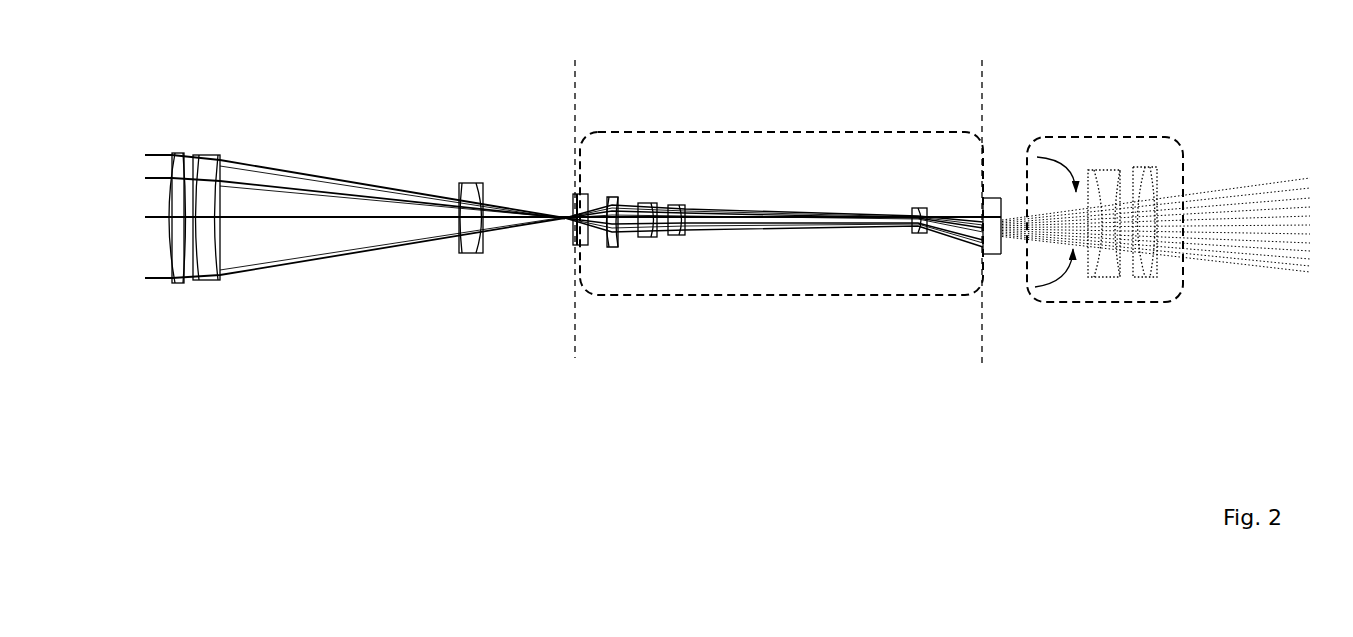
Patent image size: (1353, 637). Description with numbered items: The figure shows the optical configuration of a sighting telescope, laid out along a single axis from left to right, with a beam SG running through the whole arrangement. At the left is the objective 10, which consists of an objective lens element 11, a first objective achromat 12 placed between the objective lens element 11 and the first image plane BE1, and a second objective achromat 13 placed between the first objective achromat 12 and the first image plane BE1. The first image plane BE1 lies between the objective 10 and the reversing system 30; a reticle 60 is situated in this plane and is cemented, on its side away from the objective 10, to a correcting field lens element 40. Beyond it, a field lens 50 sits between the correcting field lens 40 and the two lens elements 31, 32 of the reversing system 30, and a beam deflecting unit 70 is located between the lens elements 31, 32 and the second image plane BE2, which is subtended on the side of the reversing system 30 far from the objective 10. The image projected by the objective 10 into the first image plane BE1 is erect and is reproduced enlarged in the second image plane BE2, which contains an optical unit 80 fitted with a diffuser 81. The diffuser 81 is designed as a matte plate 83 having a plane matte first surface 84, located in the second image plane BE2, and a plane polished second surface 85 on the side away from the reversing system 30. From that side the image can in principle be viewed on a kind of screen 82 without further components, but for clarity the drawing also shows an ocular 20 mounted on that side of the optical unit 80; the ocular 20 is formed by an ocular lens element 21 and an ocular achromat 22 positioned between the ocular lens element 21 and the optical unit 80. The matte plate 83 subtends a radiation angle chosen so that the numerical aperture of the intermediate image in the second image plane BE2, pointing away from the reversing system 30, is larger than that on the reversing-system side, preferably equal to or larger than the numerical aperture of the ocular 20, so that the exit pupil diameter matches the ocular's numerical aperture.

The objective 10 is at (314, 160).
The objective lens element 11 is at (175, 160).
The first objective achromat 12 is at (212, 158).
The second objective achromat 13 is at (468, 198).
The beam SG is at (569, 243).
The correcting field lens element 40 is at (571, 295).
The reticle 60 is at (574, 245).
The first image plane BE1 is at (574, 196).
The second image plane BE2 is at (981, 199).
The reversing system 30 is at (781, 213).
The field lens 50 is at (614, 197).
The lens element 31 is at (649, 238).
The lens element 32 is at (681, 236).
The beam deflecting unit 70 is at (918, 234).
The optical unit 80 is at (1023, 226).
The diffuser 81 is at (1006, 226).
The matte plate 83 is at (1006, 226).
The screen 82 is at (1003, 216).
The first surface 84 is at (981, 249).
The second surface 85 is at (998, 197).
The ocular 20 is at (1111, 234).
The ocular lens element 21 is at (1105, 270).
The ocular achromat 22 is at (1140, 263).